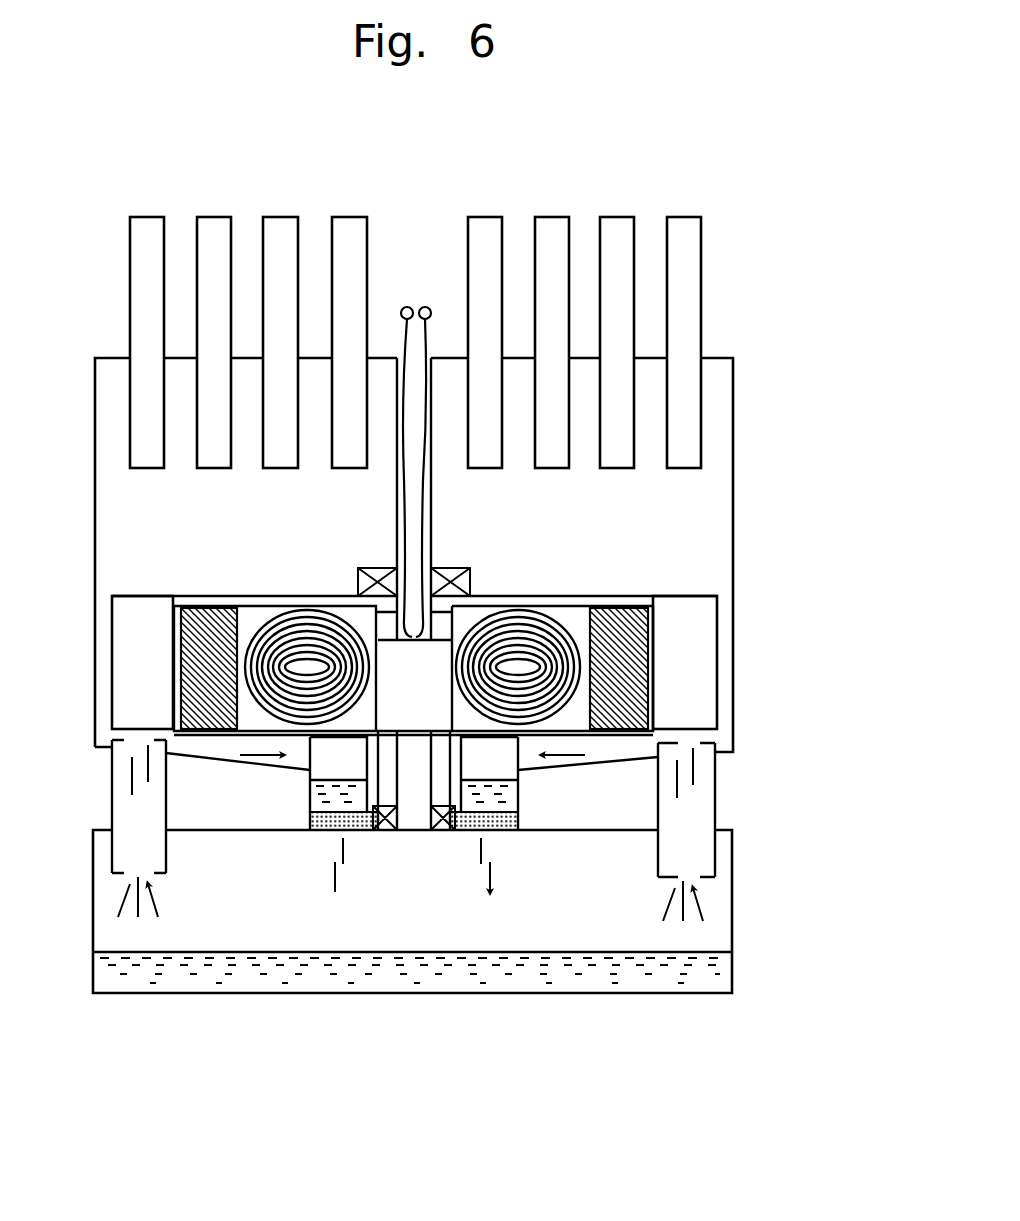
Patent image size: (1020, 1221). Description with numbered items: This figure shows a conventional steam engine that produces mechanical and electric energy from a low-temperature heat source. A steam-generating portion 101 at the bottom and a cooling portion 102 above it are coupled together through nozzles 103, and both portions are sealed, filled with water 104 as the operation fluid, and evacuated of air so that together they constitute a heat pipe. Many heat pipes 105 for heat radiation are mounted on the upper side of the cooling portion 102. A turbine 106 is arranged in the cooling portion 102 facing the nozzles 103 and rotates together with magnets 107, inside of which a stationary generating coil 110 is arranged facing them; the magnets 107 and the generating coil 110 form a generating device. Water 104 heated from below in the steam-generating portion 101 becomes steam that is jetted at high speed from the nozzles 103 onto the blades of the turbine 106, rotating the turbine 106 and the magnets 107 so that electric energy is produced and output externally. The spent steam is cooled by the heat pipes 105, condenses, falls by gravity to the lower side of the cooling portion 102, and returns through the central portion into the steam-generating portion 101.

The steam-generating portion 101 is at (543, 995).
The cooling portion 102 is at (733, 490).
The nozzles 103 is at (114, 800).
The water 104 is at (352, 982).
The heat pipes 105 is at (354, 217).
The turbine 106 is at (672, 640).
The magnets 107 is at (190, 703).
The generating coil 110 is at (292, 660).